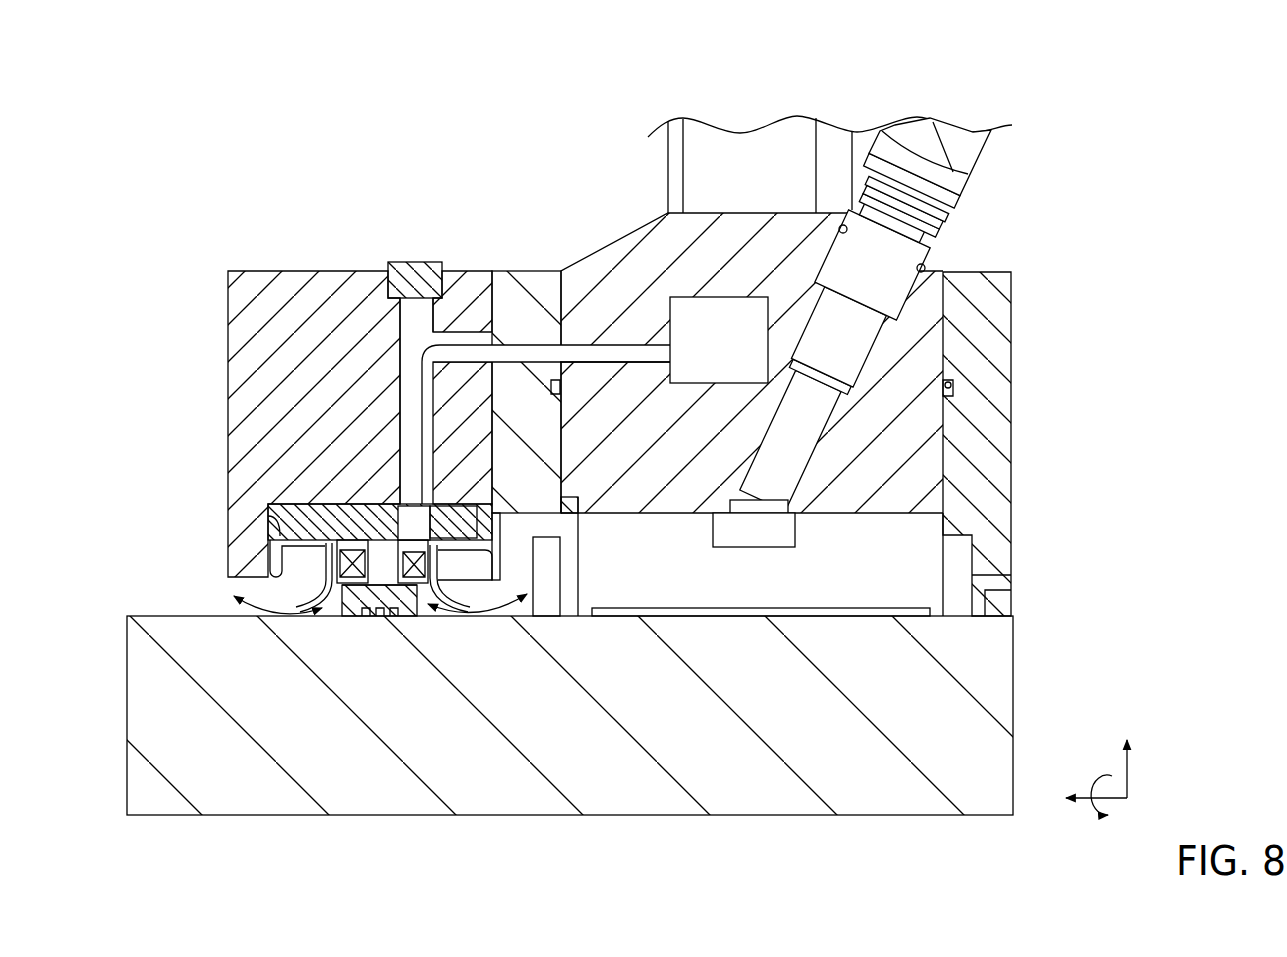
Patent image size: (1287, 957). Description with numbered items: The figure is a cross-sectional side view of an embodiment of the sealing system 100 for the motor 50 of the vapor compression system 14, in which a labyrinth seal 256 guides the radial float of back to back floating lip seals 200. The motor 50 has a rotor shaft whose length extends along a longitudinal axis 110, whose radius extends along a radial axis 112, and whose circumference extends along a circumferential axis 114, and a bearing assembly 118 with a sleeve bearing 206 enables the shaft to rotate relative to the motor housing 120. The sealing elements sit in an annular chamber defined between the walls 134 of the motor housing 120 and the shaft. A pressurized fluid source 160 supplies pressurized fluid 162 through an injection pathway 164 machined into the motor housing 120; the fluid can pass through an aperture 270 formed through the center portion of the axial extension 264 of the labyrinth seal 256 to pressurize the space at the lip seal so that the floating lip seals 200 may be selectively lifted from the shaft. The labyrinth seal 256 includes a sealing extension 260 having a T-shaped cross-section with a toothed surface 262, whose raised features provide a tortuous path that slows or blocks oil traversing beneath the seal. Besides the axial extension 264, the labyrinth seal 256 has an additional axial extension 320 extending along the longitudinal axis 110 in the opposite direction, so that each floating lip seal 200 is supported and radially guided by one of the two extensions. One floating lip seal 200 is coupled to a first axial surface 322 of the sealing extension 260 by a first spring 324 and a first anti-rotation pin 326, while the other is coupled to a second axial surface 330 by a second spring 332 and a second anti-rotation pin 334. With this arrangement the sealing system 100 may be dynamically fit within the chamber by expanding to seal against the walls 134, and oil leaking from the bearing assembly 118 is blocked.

The vapor compression system 14 is at (748, 90).
The motor 50 is at (622, 100).
The sealing system 100 is at (489, 220).
The longitudinal axis 110 is at (1122, 786).
The radial axis 112 is at (1128, 772).
The circumferential axis 114 is at (1098, 820).
The bearing assembly 118 is at (758, 652).
The motor housing 120 is at (1020, 382).
The walls 134 is at (462, 504).
The pressurized fluid source 160 is at (735, 350).
The pressurized fluid 162 is at (537, 345).
The injection pathway 164 is at (603, 360).
The floating lip seals 200 is at (306, 612).
The sleeve bearing 206 is at (777, 592).
The labyrinth seal 256 is at (398, 636).
The sealing extension 260 is at (383, 618).
The toothed surface 262 is at (354, 617).
The axial extension 264 is at (455, 504).
The aperture 270 is at (404, 520).
The additional axial extension 320 is at (266, 504).
The first axial surface 322 is at (330, 540).
The first spring 324 is at (440, 550).
The first anti-rotation pin 326 is at (396, 514).
The second axial surface 330 is at (352, 540).
The second spring 332 is at (440, 579).
The second anti-rotation pin 334 is at (413, 540).